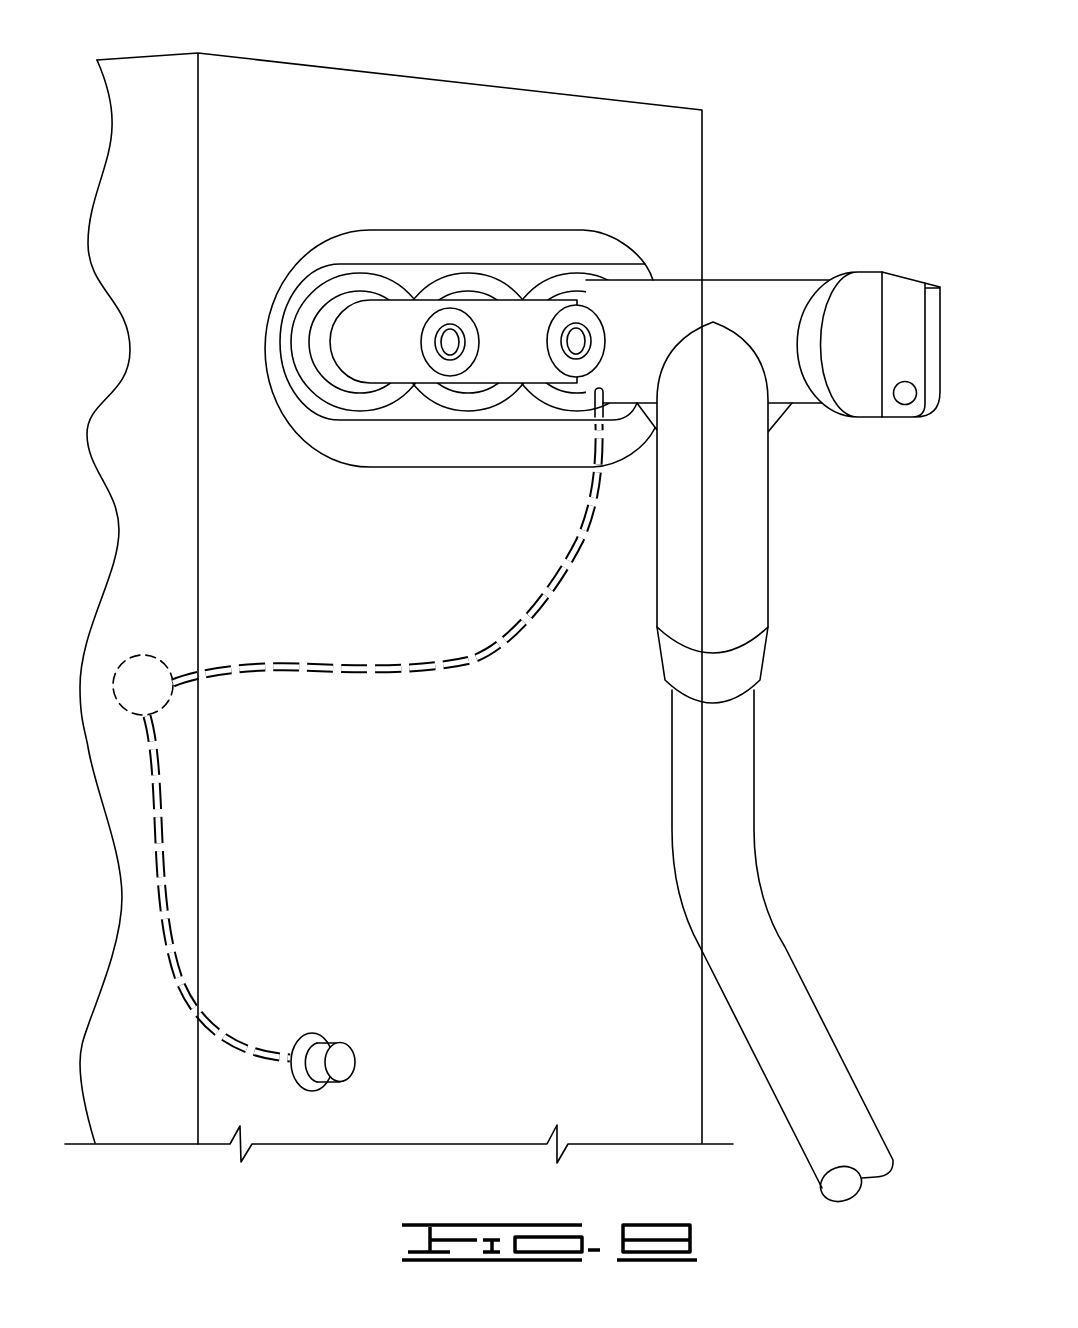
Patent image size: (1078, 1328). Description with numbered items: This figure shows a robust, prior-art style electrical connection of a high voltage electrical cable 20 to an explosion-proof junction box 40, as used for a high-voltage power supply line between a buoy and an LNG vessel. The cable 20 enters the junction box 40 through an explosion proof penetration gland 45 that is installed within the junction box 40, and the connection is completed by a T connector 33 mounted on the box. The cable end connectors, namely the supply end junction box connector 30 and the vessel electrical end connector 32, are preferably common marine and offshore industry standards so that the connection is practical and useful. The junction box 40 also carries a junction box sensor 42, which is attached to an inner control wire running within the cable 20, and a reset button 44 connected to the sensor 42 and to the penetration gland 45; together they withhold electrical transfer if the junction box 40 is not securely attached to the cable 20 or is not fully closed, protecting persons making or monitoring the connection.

The high voltage electrical cable 20 is at (789, 953).
The supply end junction box connector 30 is at (754, 280).
The vessel electrical end connector 32 is at (865, 272).
The T connector 33 is at (918, 272).
The junction box 40 is at (480, 790).
The junction box sensor 42 is at (143, 655).
The reset button 44 is at (318, 1092).
The explosion proof penetration gland 45 is at (404, 328).